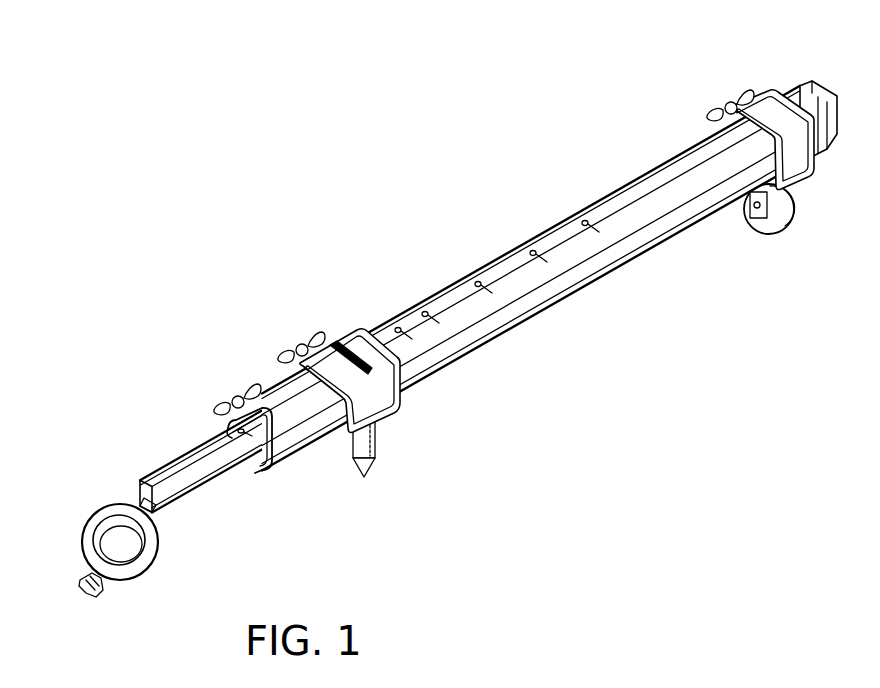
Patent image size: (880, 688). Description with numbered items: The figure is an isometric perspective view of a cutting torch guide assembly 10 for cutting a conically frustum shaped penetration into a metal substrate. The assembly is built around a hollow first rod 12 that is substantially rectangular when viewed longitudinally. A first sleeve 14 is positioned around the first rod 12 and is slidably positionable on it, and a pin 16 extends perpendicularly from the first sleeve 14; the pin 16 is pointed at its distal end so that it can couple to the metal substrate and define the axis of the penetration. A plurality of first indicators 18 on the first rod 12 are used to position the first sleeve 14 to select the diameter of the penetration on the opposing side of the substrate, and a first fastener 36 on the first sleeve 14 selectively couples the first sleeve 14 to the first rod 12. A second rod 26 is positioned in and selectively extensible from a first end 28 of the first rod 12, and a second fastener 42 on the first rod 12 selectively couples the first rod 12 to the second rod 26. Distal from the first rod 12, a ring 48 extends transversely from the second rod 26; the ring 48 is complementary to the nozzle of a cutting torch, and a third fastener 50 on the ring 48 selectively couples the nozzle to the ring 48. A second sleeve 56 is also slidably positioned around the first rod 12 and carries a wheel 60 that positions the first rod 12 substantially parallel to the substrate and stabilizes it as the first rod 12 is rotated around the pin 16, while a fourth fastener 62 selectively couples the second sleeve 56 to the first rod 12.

The cutting torch guide assembly 10 is at (305, 190).
The first rod 12 is at (618, 190).
The first sleeve 14 is at (365, 328).
The pin 16 is at (378, 432).
The first indicators 18 is at (532, 251).
The second rod 26 is at (177, 461).
The first end 28 is at (260, 472).
The first fastener 36 is at (308, 336).
The second fastener 42 is at (236, 390).
The ring 48 is at (146, 572).
The third fastener 50 is at (88, 598).
The second sleeve 56 is at (768, 91).
The wheel 60 is at (774, 233).
The fourth fastener 62 is at (726, 97).